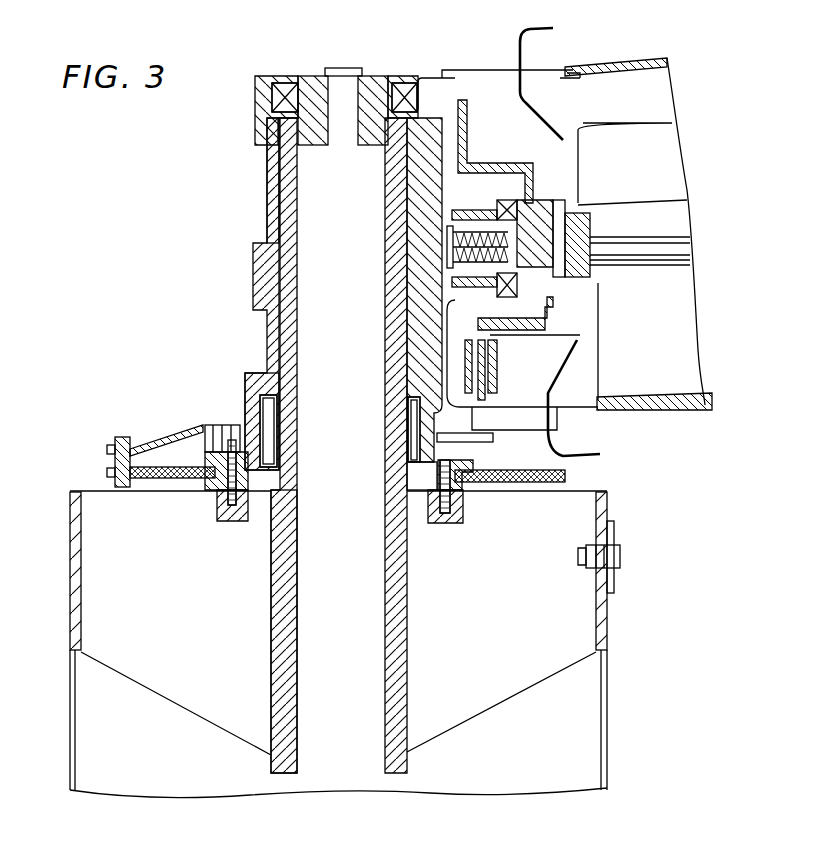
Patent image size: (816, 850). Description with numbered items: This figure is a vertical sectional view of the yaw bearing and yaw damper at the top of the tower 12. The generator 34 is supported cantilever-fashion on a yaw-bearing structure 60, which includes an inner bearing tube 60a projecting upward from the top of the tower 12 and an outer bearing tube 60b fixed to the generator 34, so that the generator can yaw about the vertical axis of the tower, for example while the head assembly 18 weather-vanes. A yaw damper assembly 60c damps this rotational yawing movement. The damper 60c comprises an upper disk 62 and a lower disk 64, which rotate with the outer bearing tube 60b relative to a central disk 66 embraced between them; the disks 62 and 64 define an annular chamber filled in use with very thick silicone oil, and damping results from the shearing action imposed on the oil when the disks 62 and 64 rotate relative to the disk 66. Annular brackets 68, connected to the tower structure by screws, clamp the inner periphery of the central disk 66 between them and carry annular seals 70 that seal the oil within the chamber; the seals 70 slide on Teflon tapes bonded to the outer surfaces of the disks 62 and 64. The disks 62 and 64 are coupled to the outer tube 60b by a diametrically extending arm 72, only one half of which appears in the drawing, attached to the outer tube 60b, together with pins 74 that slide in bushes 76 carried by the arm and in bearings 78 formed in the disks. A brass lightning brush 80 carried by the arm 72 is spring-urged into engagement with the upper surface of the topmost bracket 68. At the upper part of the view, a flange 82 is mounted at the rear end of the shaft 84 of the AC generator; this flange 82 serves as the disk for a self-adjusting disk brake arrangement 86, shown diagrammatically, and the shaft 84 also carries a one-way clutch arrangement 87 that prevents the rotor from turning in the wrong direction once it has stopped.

The tower 12 is at (53, 748).
The head assembly 18 is at (168, 273).
The generator 34 is at (656, 62).
The yaw-bearing structure 60 is at (248, 344).
The inner bearing tube 60a is at (272, 580).
The outer bearing tube 60b is at (266, 190).
The yaw damper assembly 60c is at (147, 424).
The upper disk 62 is at (212, 468).
The lower disk 64 is at (150, 478).
The central disk 66 is at (508, 484).
The annular brackets 68 is at (455, 460).
The annular seals 70 is at (216, 481).
The diametrically extending arm 72 is at (181, 432).
The pins 74 is at (118, 437).
The bushes 76 is at (107, 451).
The bearings 78 is at (108, 472).
The brass lightning brush 80 is at (228, 443).
The flange 82 is at (456, 128).
The shaft 84 is at (622, 250).
The self-adjusting disk brake arrangement 86 is at (498, 364).
The one-way clutch arrangement 87 is at (412, 224).